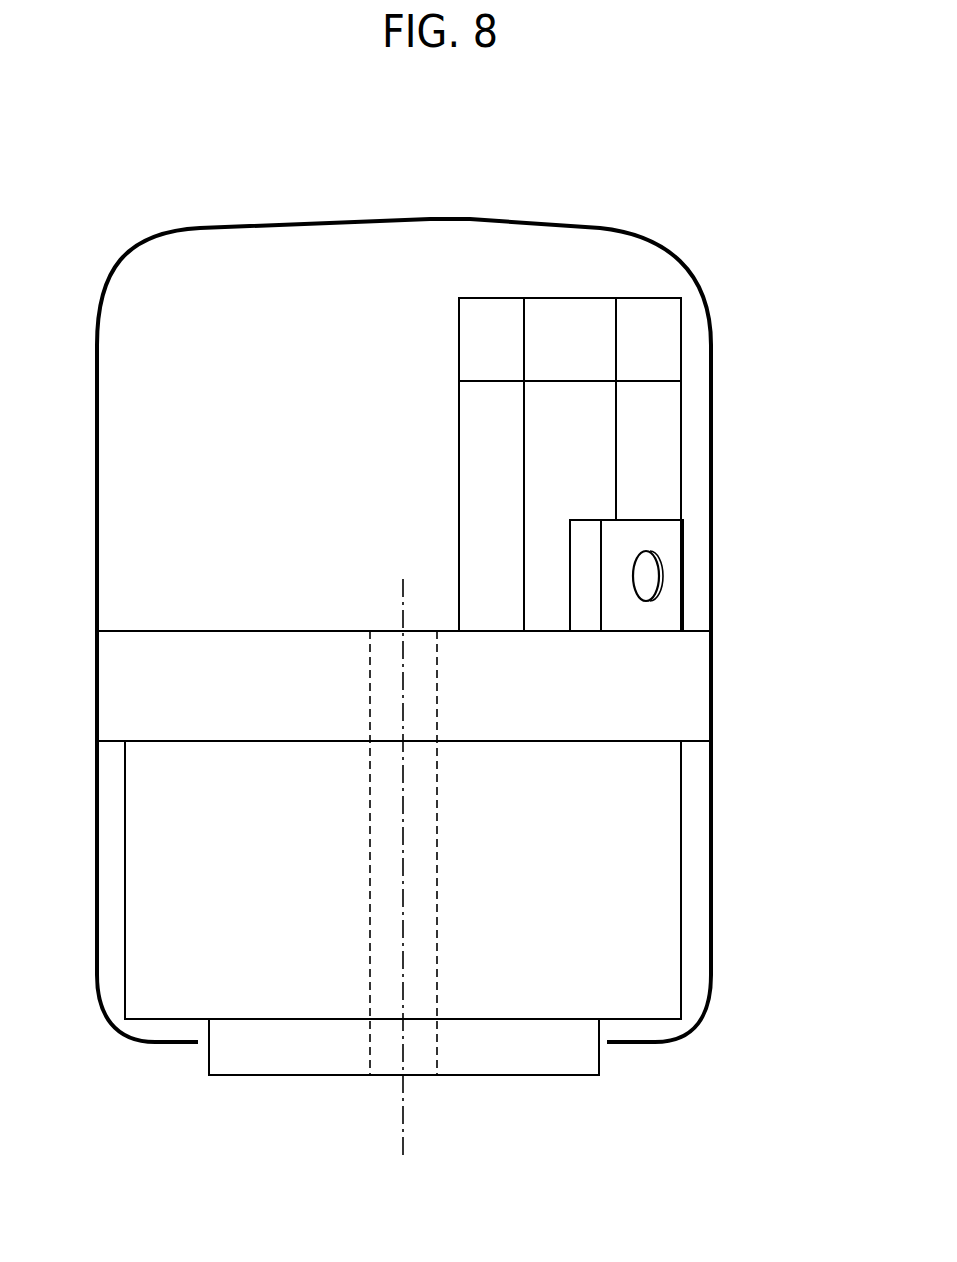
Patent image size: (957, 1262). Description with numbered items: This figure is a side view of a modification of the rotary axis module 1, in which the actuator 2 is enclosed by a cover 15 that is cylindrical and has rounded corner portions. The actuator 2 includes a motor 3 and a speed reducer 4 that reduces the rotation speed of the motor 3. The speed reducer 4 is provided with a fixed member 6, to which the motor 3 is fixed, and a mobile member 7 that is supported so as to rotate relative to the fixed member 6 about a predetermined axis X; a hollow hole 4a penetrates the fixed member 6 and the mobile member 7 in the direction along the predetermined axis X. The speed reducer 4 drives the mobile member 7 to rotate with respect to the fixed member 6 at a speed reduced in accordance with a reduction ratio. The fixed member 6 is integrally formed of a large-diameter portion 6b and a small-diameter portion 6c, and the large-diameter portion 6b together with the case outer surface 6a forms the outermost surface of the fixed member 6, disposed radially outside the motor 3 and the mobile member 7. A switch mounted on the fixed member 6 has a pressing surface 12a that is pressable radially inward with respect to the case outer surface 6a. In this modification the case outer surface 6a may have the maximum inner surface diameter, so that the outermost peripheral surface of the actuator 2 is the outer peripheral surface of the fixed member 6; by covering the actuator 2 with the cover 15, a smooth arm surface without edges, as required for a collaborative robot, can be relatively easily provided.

The rotary axis module 1 is at (148, 213).
The actuator 2 is at (270, 416).
The motor 3 is at (458, 440).
The speed reducer 4 is at (217, 630).
The hollow hole 4a is at (370, 655).
The fixed member 6 is at (805, 662).
The case outer surface 6a is at (670, 536).
The large-diameter portion 6b is at (680, 688).
The small-diameter portion 6c is at (657, 841).
The mobile member 7 is at (477, 1075).
The pressing surface 12a is at (648, 576).
The cover 15 is at (711, 377).
The predetermined axis X is at (403, 887).